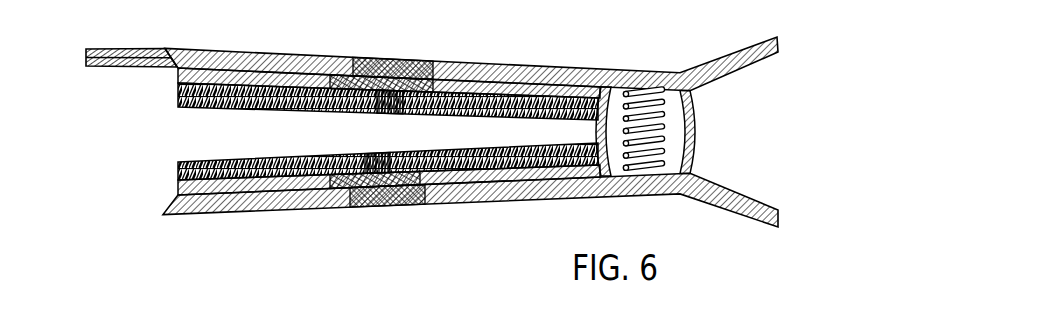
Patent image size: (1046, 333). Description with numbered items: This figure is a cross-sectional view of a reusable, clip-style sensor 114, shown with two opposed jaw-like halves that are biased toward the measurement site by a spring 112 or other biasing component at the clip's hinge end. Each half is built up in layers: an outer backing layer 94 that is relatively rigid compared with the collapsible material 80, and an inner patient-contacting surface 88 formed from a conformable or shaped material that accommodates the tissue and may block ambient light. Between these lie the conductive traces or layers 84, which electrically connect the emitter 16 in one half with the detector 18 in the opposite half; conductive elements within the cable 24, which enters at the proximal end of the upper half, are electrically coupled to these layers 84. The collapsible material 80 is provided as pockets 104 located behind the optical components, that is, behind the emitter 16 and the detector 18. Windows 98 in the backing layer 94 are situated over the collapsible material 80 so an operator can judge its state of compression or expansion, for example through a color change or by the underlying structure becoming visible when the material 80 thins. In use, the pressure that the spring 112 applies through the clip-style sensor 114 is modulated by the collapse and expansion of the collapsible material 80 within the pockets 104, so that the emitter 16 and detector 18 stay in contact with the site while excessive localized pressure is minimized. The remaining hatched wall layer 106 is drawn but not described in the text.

The emitter 16 is at (386, 108).
The detector 18 is at (393, 152).
The cable 24 is at (130, 49).
The collapsible material 80 is at (318, 90).
The conductive traces or layers 84 is at (177, 88).
The patient-contacting surfaces 88 is at (208, 105).
The backing layer 94 is at (560, 68).
The windows 98 is at (402, 60).
The pockets 104 is at (353, 57).
The outer layer 106 is at (483, 65).
The spring 112 is at (665, 130).
The clip-style sensor 114 is at (748, 50).